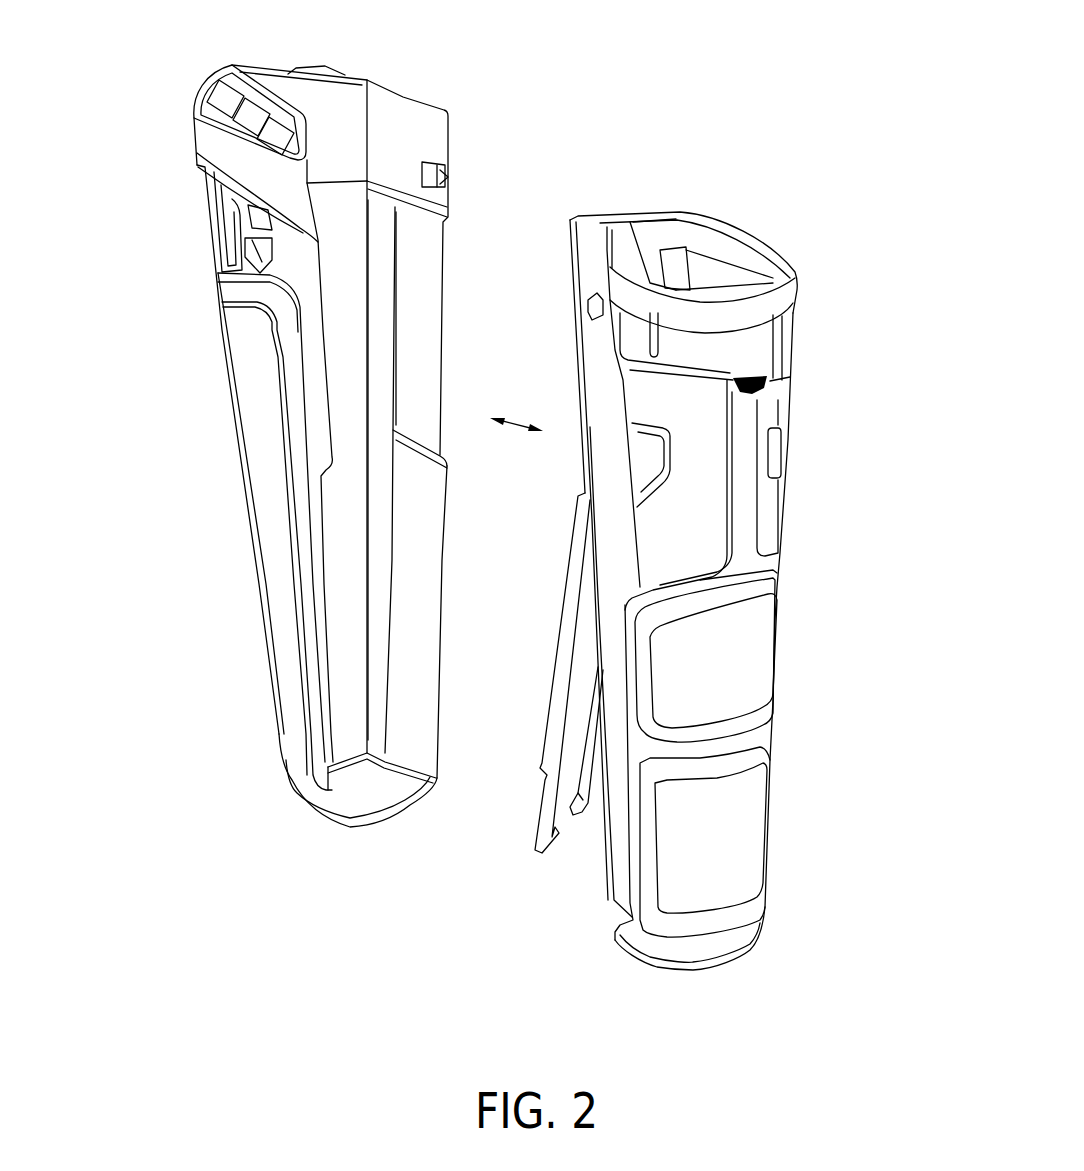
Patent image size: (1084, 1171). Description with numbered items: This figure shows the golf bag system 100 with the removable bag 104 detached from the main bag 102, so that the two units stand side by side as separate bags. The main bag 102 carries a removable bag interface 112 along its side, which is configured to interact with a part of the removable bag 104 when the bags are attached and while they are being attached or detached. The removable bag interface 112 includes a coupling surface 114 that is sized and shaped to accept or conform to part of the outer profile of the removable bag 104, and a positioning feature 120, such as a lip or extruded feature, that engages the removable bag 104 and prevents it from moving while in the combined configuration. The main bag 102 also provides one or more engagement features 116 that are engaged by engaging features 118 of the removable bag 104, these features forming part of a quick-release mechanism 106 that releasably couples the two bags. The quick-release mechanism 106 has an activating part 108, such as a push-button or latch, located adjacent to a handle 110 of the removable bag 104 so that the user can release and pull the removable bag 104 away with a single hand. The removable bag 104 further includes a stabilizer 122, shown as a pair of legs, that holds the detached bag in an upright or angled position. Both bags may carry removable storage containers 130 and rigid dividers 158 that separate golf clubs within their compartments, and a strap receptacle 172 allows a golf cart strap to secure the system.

The golf bag system 100 is at (657, 76).
The main bag 102 is at (374, 68).
The removable bag 104 is at (690, 188).
The quick-release mechanism 106 is at (452, 178).
The activating part 108 is at (760, 388).
The handle 110 is at (745, 512).
The removable bag interface 112 is at (385, 372).
The coupling surface 114 is at (421, 279).
The engagement feature 116 is at (448, 176).
The engaging feature 118 is at (592, 305).
The positioning feature 120 is at (378, 827).
The stabilizer 122 is at (547, 740).
The removable storage container 130 is at (257, 408).
The divider 158 is at (198, 84).
The strap receptacle 172 is at (216, 222).